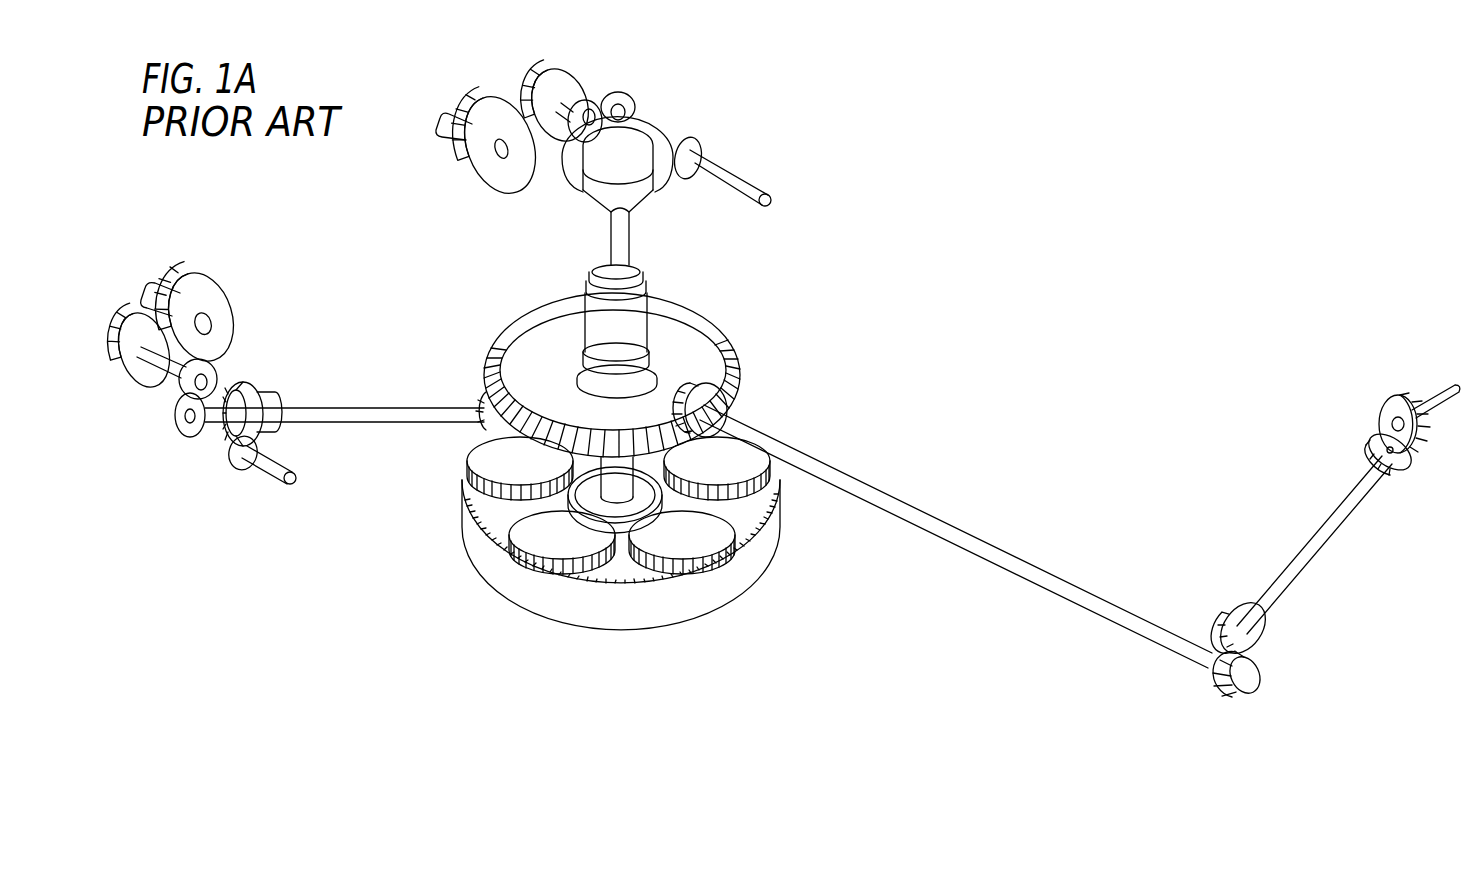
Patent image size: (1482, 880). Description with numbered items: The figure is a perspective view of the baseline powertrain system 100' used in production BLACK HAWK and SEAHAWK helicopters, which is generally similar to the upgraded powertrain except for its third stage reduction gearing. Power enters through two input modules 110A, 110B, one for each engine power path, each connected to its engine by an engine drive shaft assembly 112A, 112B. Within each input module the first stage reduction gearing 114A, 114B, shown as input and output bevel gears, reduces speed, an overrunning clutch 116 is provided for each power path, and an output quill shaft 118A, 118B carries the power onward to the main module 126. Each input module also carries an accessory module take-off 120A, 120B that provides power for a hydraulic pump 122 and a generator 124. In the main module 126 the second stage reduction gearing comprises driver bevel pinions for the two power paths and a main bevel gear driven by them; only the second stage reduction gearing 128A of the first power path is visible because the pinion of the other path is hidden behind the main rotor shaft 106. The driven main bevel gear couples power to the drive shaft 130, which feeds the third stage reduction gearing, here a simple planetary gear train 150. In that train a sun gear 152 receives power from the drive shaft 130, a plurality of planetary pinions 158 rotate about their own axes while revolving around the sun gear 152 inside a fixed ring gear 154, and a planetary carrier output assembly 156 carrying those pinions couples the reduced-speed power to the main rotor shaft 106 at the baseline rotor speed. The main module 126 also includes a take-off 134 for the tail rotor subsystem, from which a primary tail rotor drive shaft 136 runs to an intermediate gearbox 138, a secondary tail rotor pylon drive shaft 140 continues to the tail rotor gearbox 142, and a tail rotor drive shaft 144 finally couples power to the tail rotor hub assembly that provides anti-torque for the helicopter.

The baseline powertrain system 100' is at (900, 45).
The main rotor shaft 106 is at (630, 333).
The input module 110A is at (279, 527).
The input module 110B is at (742, 136).
The engine drive shaft assembly 112A is at (283, 467).
The engine drive shaft assembly 112B is at (750, 183).
The first stage reduction gearing 114A is at (229, 441).
The first stage reduction gearing 114B is at (686, 146).
The overrunning clutch 116 is at (270, 390).
The output quill shaft 118A is at (412, 423).
The output quill shaft 118B is at (623, 238).
The accessory module take-off 120A is at (163, 362).
The accessory module take-off 120B is at (588, 78).
The hydraulic pump 122 is at (233, 277).
The generator 124 is at (306, 214).
The main module 126 is at (497, 323).
The second stage reduction gearing 128A is at (487, 390).
The drive shaft 130 is at (632, 500).
The take-off 134 is at (742, 396).
The primary tail rotor drive shaft 136 is at (1073, 588).
The intermediate gearbox 138 is at (1243, 675).
The secondary tail rotor pylon drive shaft 140 is at (1297, 543).
The tail rotor gearbox 142 is at (1380, 430).
The tail rotor drive shaft 144 is at (1452, 413).
The simple planetary gear train 150 is at (820, 678).
The sun gear 152 is at (620, 523).
The fixed ring gear 154 is at (770, 564).
The planetary carrier output assembly 156 is at (520, 565).
The planetary pinions 158 is at (557, 550).